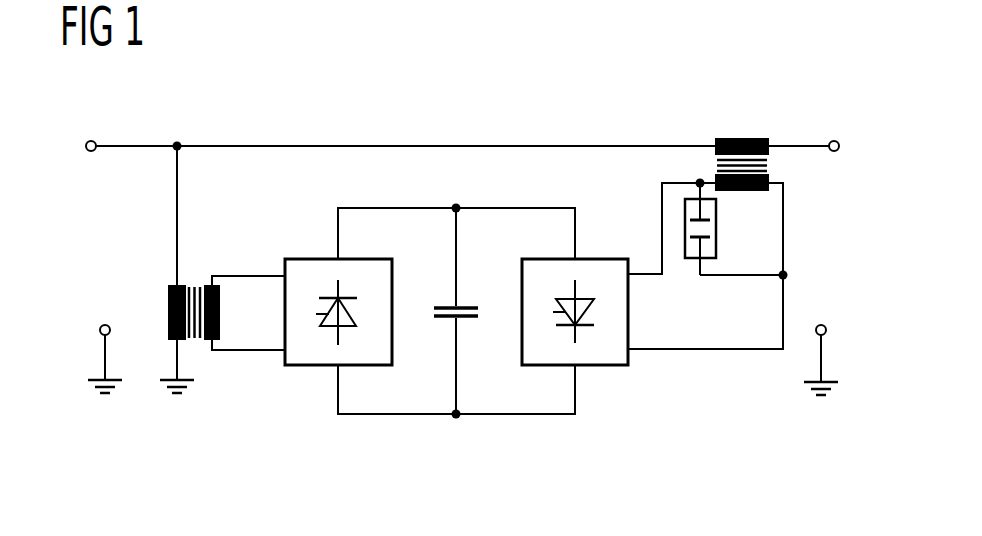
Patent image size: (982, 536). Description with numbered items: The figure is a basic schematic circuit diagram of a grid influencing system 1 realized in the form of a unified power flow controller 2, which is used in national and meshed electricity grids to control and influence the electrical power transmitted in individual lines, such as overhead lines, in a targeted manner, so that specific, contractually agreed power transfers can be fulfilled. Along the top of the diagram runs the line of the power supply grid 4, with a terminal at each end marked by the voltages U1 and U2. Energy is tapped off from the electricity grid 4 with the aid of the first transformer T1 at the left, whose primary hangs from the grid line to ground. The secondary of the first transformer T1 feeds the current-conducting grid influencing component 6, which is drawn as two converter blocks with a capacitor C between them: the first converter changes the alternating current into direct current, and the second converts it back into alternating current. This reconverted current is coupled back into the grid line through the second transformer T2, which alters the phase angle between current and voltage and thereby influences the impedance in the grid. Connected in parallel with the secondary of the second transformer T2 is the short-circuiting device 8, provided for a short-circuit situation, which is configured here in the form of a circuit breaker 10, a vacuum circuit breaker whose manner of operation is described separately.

The grid influencing system 1 is at (768, 98).
The unified power flow controller 2 is at (536, 340).
The power supply grid 4 is at (587, 146).
The grid influencing component 6 is at (400, 414).
The short-circuiting device 8 is at (700, 246).
The circuit breaker 10 is at (685, 225).
The capacitor C is at (469, 305).
The first transformer T1 is at (198, 262).
The second transformer T2 is at (797, 168).
The first voltage U1 is at (106, 332).
The second voltage U2 is at (822, 333).